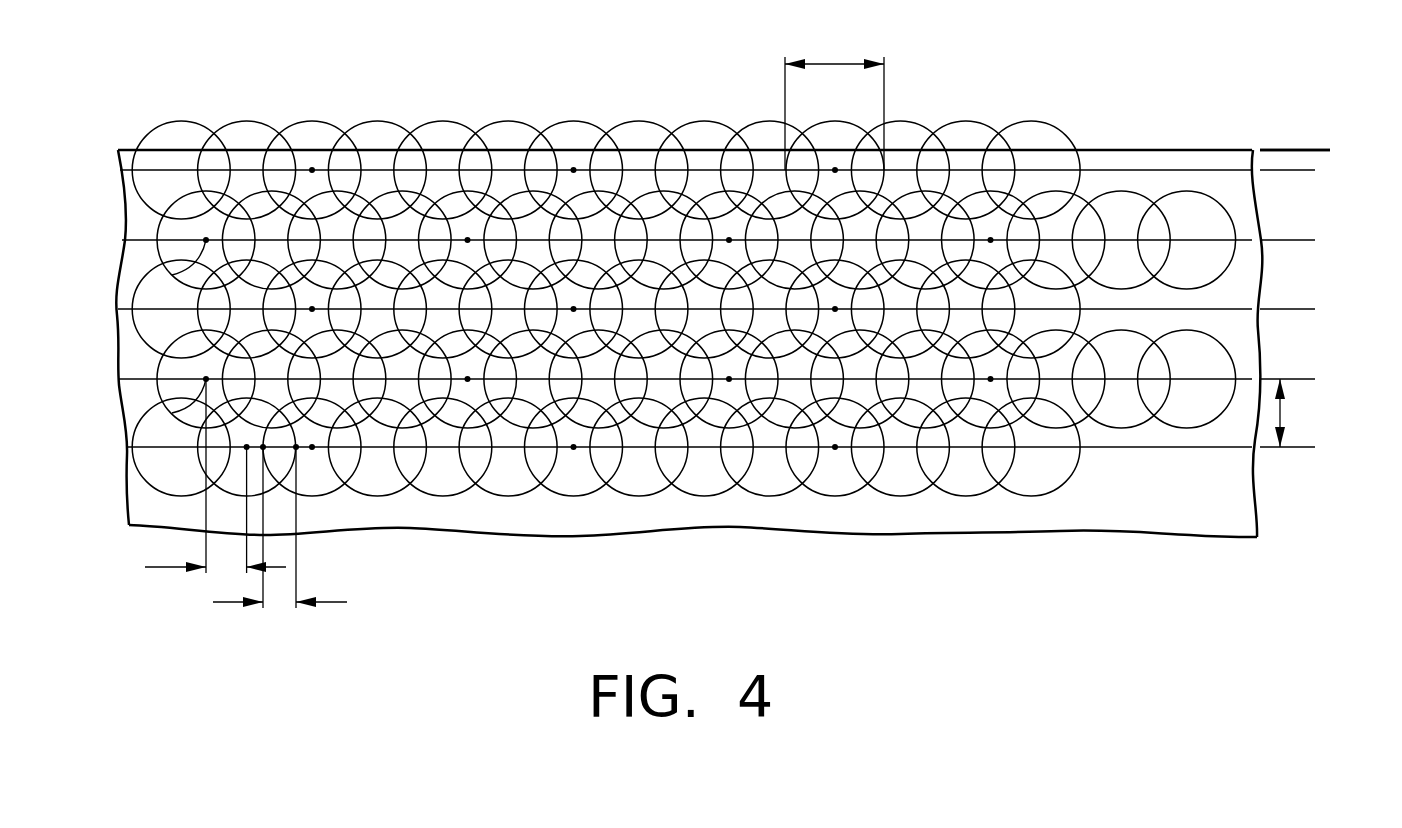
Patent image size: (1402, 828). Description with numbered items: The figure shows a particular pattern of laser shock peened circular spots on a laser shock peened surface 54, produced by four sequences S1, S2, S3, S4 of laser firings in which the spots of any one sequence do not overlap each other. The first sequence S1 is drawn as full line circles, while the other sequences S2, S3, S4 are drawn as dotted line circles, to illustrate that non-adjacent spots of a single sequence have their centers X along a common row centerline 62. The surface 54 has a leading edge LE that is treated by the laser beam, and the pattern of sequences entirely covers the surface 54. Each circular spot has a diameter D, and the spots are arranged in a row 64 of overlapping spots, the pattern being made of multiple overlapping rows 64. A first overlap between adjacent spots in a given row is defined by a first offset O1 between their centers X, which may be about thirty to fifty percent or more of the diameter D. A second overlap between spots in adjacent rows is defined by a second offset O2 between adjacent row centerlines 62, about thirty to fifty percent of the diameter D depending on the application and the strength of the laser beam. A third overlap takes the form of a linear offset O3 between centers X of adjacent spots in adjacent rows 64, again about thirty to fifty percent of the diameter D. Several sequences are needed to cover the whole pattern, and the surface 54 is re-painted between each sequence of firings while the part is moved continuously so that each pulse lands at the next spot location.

The laser shock peened surface 54 is at (1230, 502).
The row centerline 62 is at (1293, 170).
The row of overlapping laser shock peened circular spots 64 is at (122, 110).
The first sequence S1 is at (313, 120).
The second sequence S2 is at (367, 122).
The third sequence S3 is at (450, 122).
The fourth sequence S4 is at (510, 121).
The diameter D is at (833, 62).
The first offset O1 is at (347, 602).
The second offset O2 is at (1283, 413).
The linear offset O3 is at (163, 568).
The leading edge LE is at (1310, 148).
The centers X is at (172, 276).